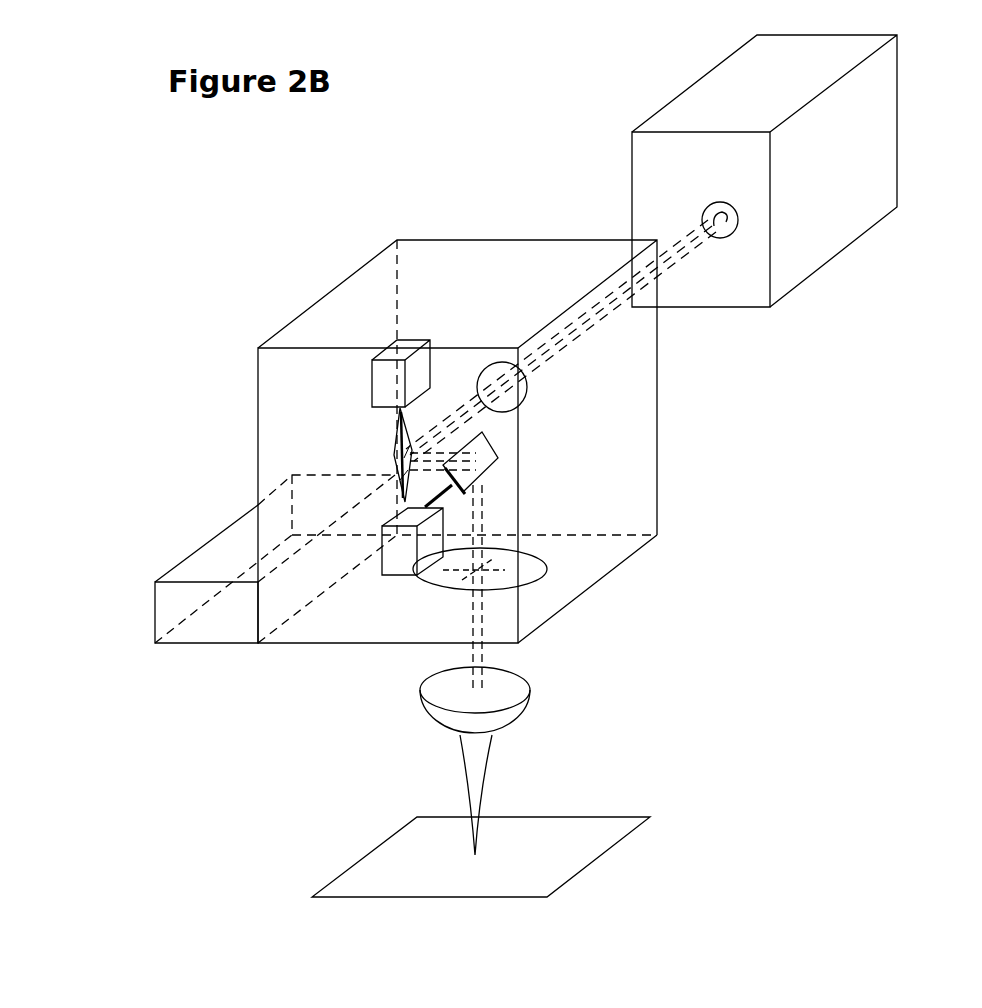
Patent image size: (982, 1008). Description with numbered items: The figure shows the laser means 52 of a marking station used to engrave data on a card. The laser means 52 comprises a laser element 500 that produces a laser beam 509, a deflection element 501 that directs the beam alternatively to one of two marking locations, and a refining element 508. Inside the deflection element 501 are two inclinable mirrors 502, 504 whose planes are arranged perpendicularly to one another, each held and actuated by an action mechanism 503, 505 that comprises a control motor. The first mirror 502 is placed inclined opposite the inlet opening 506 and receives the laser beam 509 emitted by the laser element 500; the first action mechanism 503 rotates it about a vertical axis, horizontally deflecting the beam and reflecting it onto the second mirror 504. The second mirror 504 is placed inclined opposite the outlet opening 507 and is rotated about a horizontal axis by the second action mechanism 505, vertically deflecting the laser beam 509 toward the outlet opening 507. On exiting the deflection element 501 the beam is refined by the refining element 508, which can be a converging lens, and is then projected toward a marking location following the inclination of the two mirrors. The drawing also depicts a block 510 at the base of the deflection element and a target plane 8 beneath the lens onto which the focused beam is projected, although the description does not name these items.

The laser means 52 is at (500, 162).
The laser element 500 is at (818, 240).
The deflection element 501 is at (350, 277).
The first mirror 502 is at (395, 448).
The first action mechanism 503 is at (395, 343).
The second mirror 504 is at (500, 458).
The second action mechanism 505 is at (383, 528).
The inlet opening 506 is at (513, 403).
The outlet opening 507 is at (547, 578).
The refining element 508 is at (512, 698).
The laser beam 509 is at (588, 327).
The mounting block 510 is at (227, 622).
The workpiece 8 is at (593, 833).